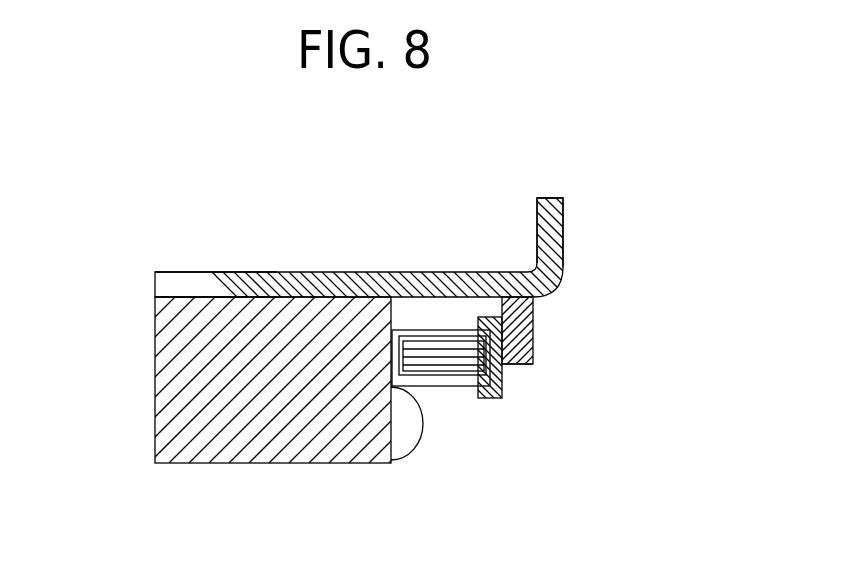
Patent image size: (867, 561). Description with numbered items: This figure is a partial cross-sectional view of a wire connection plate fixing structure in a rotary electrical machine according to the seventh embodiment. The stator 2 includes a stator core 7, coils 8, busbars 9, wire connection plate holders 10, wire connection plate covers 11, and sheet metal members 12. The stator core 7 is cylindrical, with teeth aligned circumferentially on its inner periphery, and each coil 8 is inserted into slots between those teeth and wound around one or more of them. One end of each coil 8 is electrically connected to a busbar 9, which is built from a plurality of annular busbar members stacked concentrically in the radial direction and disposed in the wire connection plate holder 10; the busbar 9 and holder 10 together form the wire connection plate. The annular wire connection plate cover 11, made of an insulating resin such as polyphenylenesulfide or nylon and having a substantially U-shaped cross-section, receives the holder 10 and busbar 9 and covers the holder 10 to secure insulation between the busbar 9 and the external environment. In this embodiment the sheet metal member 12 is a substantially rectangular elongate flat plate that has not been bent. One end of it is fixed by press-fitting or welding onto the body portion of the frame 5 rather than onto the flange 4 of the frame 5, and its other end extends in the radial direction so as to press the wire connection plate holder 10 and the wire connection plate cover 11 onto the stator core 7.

The stator 2 is at (183, 297).
The flange 4 is at (563, 235).
The frame 5 is at (412, 272).
The stator core 7 is at (277, 297).
The coil 8 is at (423, 433).
The busbar 9 is at (502, 347).
The wire connection plate holder 10 is at (462, 386).
The wire connection plate cover 11 is at (502, 327).
The sheet metal member 12 is at (533, 318).